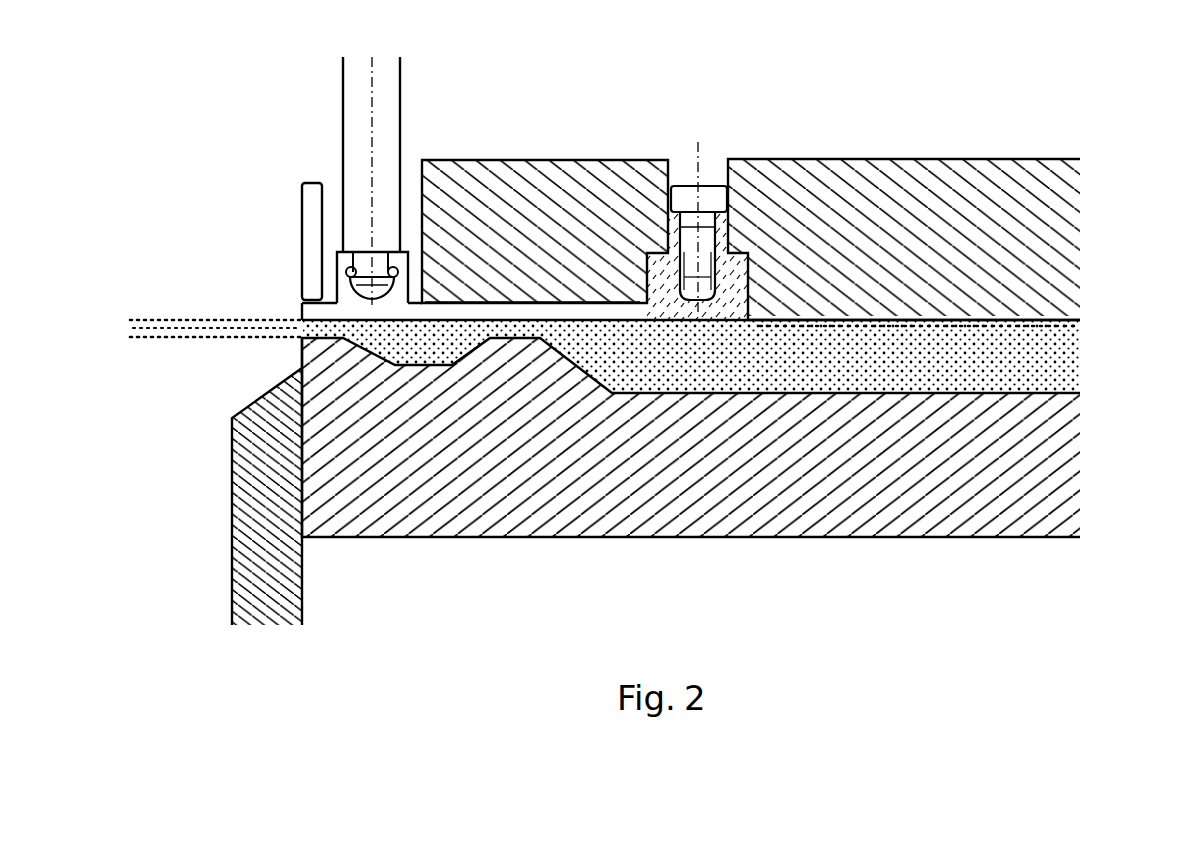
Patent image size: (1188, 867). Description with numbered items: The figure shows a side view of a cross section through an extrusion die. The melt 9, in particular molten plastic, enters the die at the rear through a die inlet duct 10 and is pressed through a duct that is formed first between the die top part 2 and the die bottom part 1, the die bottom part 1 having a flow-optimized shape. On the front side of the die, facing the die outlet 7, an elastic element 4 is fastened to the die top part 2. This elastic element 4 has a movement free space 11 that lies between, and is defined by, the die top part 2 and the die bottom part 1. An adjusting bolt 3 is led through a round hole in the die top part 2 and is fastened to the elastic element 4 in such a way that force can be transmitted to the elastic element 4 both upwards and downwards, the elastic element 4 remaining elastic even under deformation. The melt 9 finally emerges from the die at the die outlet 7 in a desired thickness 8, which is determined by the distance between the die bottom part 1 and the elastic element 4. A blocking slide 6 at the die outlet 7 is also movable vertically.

The die bottom part 1 is at (897, 473).
The die top part 2 is at (907, 218).
The adjusting bolt 3 is at (360, 133).
The elastic element 4 is at (525, 315).
The blocking slide 6 is at (270, 500).
The die outlet 7 is at (300, 327).
The desired thickness 8 is at (198, 443).
The melt 9 is at (970, 358).
The die inlet duct 10 is at (1072, 348).
The movement free space 11 is at (435, 288).